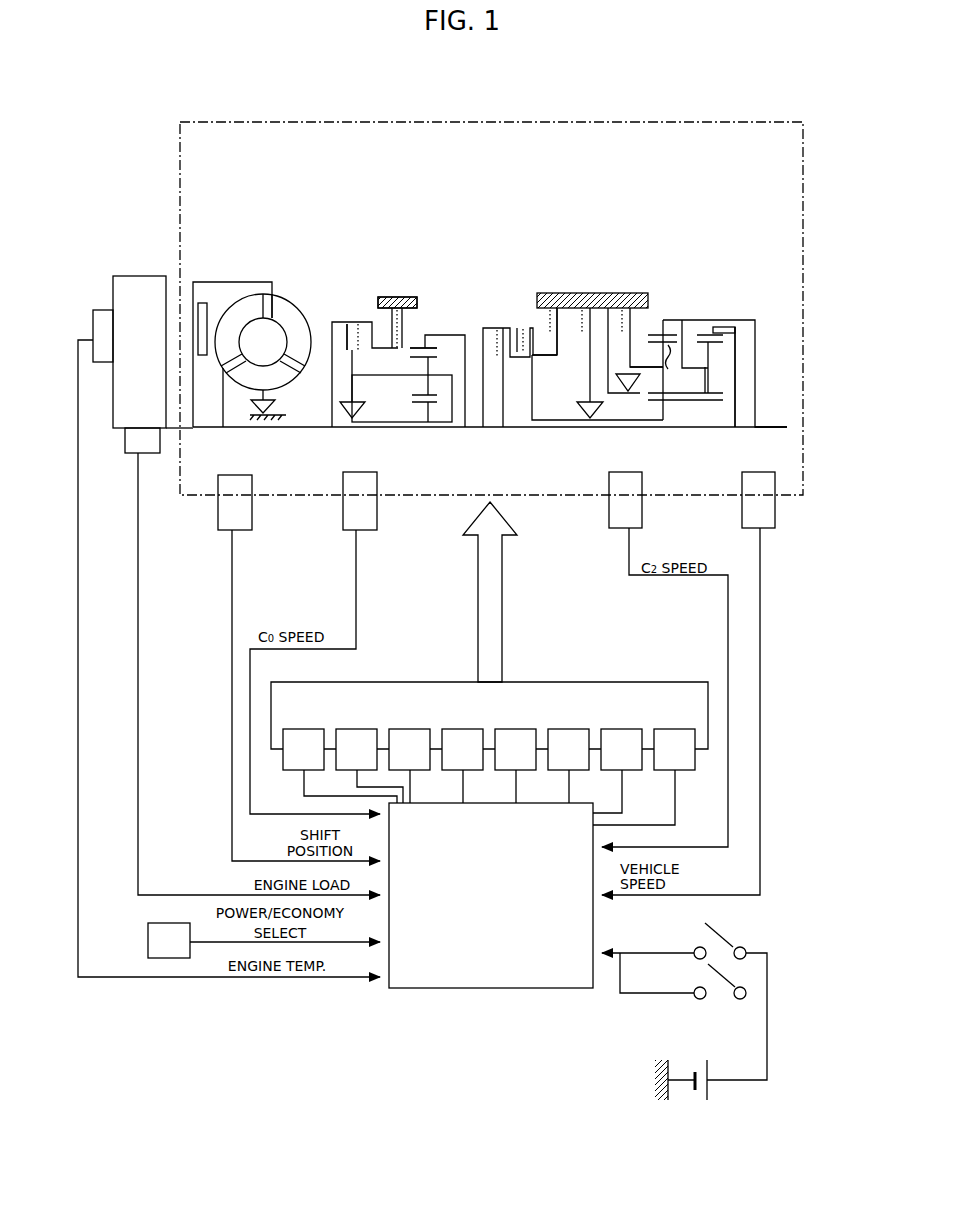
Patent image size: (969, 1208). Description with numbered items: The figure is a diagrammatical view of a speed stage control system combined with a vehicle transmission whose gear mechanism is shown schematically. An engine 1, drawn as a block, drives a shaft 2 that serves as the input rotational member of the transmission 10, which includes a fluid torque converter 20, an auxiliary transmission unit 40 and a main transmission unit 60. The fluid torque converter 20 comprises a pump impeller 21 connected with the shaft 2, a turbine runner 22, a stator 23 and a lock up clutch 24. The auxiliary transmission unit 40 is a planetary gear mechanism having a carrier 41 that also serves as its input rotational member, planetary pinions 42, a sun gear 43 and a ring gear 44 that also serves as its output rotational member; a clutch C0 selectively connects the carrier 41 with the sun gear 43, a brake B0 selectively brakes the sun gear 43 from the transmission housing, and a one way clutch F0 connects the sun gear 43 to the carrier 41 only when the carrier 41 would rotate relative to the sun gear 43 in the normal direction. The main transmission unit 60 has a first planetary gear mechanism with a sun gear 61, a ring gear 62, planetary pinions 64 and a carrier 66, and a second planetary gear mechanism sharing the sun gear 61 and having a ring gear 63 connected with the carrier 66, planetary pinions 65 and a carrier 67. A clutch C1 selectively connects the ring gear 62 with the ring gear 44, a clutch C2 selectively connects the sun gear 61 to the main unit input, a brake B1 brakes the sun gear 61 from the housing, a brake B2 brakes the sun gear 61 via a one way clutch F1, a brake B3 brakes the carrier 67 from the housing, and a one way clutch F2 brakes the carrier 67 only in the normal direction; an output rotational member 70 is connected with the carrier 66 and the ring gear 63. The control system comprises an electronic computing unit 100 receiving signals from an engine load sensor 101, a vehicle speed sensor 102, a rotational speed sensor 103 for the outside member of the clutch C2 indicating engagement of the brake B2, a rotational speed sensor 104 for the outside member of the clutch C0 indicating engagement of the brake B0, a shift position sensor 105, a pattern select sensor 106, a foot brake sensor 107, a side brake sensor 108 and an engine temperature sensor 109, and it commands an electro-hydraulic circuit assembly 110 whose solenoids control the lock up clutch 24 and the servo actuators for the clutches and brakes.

The engine 1 is at (127, 275).
The shaft 2 is at (184, 430).
The transmission 10 is at (590, 120).
The fluid torque converter 20 is at (490, 295).
The pump impeller 21 is at (300, 316).
The turbine runner 22 is at (246, 329).
The stator 23 is at (281, 392).
The lock up clutch 24 is at (208, 320).
The auxiliary transmission unit 40 is at (398, 301).
The carrier 41 is at (438, 380).
The planetary pinions 42 is at (415, 358).
The sun gear 43 is at (420, 401).
The ring gear 44 is at (416, 347).
The main transmission unit 60 is at (660, 328).
The sun gear 61 is at (725, 403).
The ring gear 62 is at (722, 330).
The ring gear 63 is at (654, 332).
The planetary pinions 64 is at (727, 345).
The planetary pinions 65 is at (672, 366).
The carrier 66 is at (726, 390).
The carrier 67 is at (634, 370).
The output rotational member 70 is at (787, 427).
The electronic computing unit 100 is at (440, 990).
The engine load sensor 101 is at (134, 455).
The vehicle speed sensor 102 is at (775, 502).
The rotational speed sensor 103 is at (642, 510).
The rotational speed sensor 104 is at (377, 505).
The shift position sensor 105 is at (252, 505).
The pattern select sensor 106 is at (148, 938).
The foot brake sensor 107 is at (730, 945).
The side brake sensor 108 is at (728, 990).
The engine temperature sensor 109 is at (97, 320).
The electro-hydraulic circuit assembly 110 is at (660, 682).
The clutch C0 is at (358, 322).
The clutch C1 is at (497, 328).
The clutch C2 is at (520, 328).
The brake B0 is at (414, 297).
The brake B1 is at (569, 299).
The brake B2 is at (605, 300).
The brake B3 is at (647, 301).
The one way clutch F0 is at (366, 413).
The one way clutch F1 is at (577, 406).
The one way clutch F2 is at (636, 386).